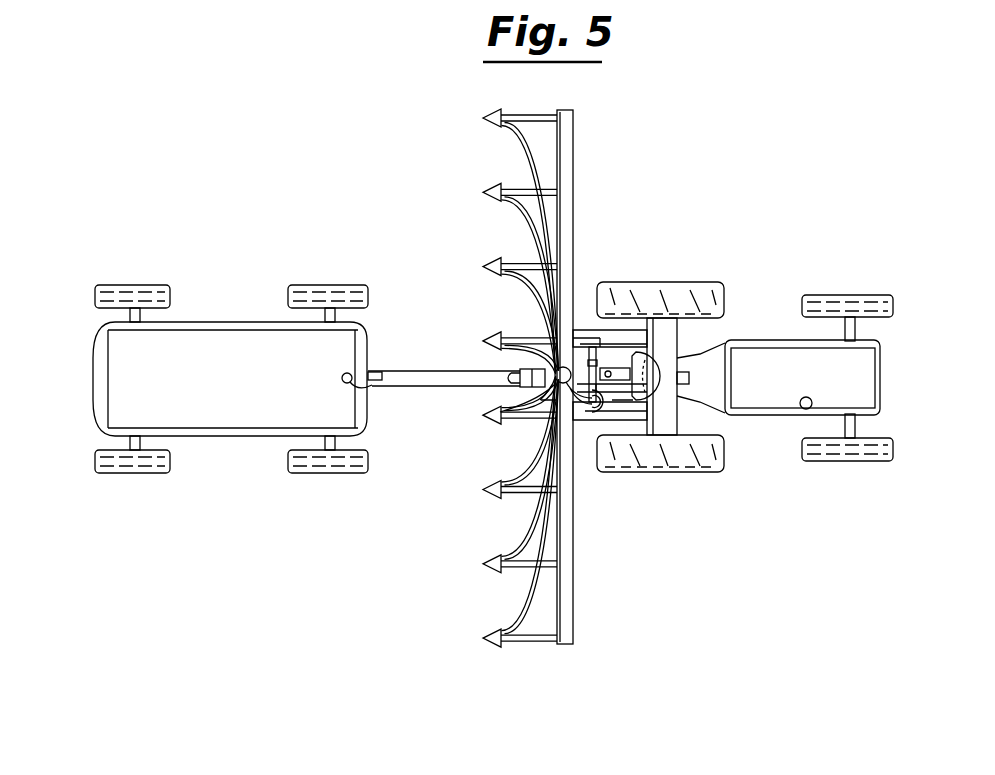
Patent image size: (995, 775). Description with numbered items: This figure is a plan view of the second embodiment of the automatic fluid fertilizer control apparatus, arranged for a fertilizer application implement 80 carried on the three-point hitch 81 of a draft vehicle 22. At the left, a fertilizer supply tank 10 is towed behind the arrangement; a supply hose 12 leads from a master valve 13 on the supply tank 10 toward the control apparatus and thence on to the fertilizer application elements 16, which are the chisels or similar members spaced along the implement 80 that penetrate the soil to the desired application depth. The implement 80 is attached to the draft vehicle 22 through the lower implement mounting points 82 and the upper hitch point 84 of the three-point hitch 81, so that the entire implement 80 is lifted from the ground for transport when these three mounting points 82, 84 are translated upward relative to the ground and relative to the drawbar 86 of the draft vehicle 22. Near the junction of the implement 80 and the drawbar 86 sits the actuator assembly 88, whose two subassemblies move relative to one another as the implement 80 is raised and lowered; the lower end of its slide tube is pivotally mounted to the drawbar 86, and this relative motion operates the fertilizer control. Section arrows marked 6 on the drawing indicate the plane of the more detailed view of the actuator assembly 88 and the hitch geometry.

The fertilizer supply tank 10 is at (246, 386).
The supply hose 12 is at (437, 392).
The master valve 13 is at (352, 374).
The fertilizer application elements 16 is at (489, 126).
The draft vehicle 22 is at (816, 386).
The implement 80 is at (540, 301).
The three-point hitch 81 is at (621, 320).
The lower implement mounting points 82 is at (598, 420).
The upper hitch point 84 is at (592, 332).
The drawbar 86 is at (645, 398).
The actuator assembly 88 is at (560, 430).
The section line 6 is at (548, 400).